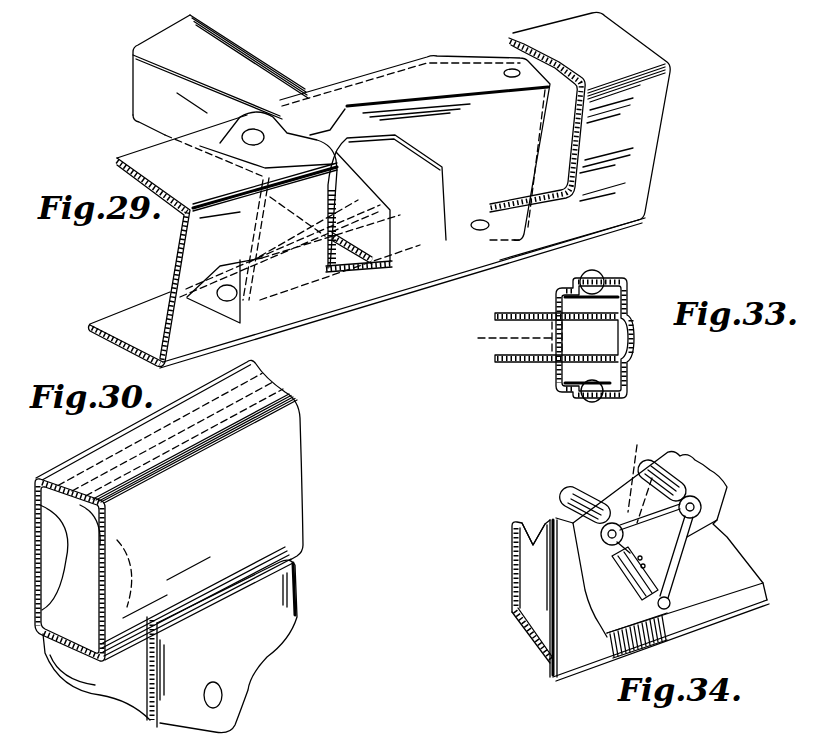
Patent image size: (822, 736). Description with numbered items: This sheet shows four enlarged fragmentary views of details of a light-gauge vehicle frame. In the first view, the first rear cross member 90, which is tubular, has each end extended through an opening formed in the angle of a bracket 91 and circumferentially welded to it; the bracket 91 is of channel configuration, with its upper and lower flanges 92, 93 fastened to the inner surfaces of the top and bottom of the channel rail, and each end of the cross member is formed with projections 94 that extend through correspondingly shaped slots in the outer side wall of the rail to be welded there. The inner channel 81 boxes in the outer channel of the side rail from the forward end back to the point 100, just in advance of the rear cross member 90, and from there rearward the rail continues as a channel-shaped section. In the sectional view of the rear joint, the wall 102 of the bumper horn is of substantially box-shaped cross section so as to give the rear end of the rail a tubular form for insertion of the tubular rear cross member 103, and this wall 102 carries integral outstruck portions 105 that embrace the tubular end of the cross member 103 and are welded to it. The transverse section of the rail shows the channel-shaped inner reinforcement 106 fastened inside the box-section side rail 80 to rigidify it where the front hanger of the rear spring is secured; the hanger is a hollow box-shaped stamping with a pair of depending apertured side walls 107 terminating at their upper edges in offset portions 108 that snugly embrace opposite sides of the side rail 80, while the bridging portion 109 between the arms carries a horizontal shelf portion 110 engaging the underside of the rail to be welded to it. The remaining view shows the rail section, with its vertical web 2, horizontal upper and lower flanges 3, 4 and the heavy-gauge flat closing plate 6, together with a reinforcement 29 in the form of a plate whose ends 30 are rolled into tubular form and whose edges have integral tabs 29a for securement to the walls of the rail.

In FIG. 29, the first rear cross member 90 is at (135, 78).
In FIG. 29, the bracket 91 is at (367, 123).
In FIG. 29, the upper flange 92 is at (455, 70).
In FIG. 29, the lower flange 93 is at (482, 232).
In FIG. 29, the projections 94 is at (445, 205).
In FIG. 29, the inner channel 81 is at (180, 252).
In FIG. 33, the point 100 is at (622, 304).
In FIG. 33, the box-shaped wall portion 102 is at (556, 298).
In FIG. 33, the tubular rear cross member 103 is at (530, 361).
In FIG. 30, the tubular rear cross member 103 is at (319, 729).
In FIG. 33, the outstruck portions 105 is at (497, 341).
In FIG. 30, the outstruck portions 105 is at (281, 729).
In FIG. 30, the side rail 80 is at (292, 470).
In FIG. 30, the channel-shaped inner reinforcement 106 is at (70, 500).
In FIG. 30, the depending apertured side walls 107 is at (277, 620).
In FIG. 30, the offset portions 108 is at (234, 582).
In FIG. 30, the bridging portion 109 is at (118, 690).
In FIG. 30, the horizontal shelf portion 110 is at (90, 683).
In FIG. 34, the vertical web 2 is at (511, 563).
In FIG. 34, the upper flange 3 is at (535, 543).
In FIG. 34, the lower flange 4 is at (525, 625).
In FIG. 34, the flat plate 6 is at (575, 620).
In FIG. 34, the reinforcement 29 is at (718, 556).
In FIG. 34, the integral tabs 29a is at (625, 592).
In FIG. 34, the rolled ends 30 is at (703, 508).